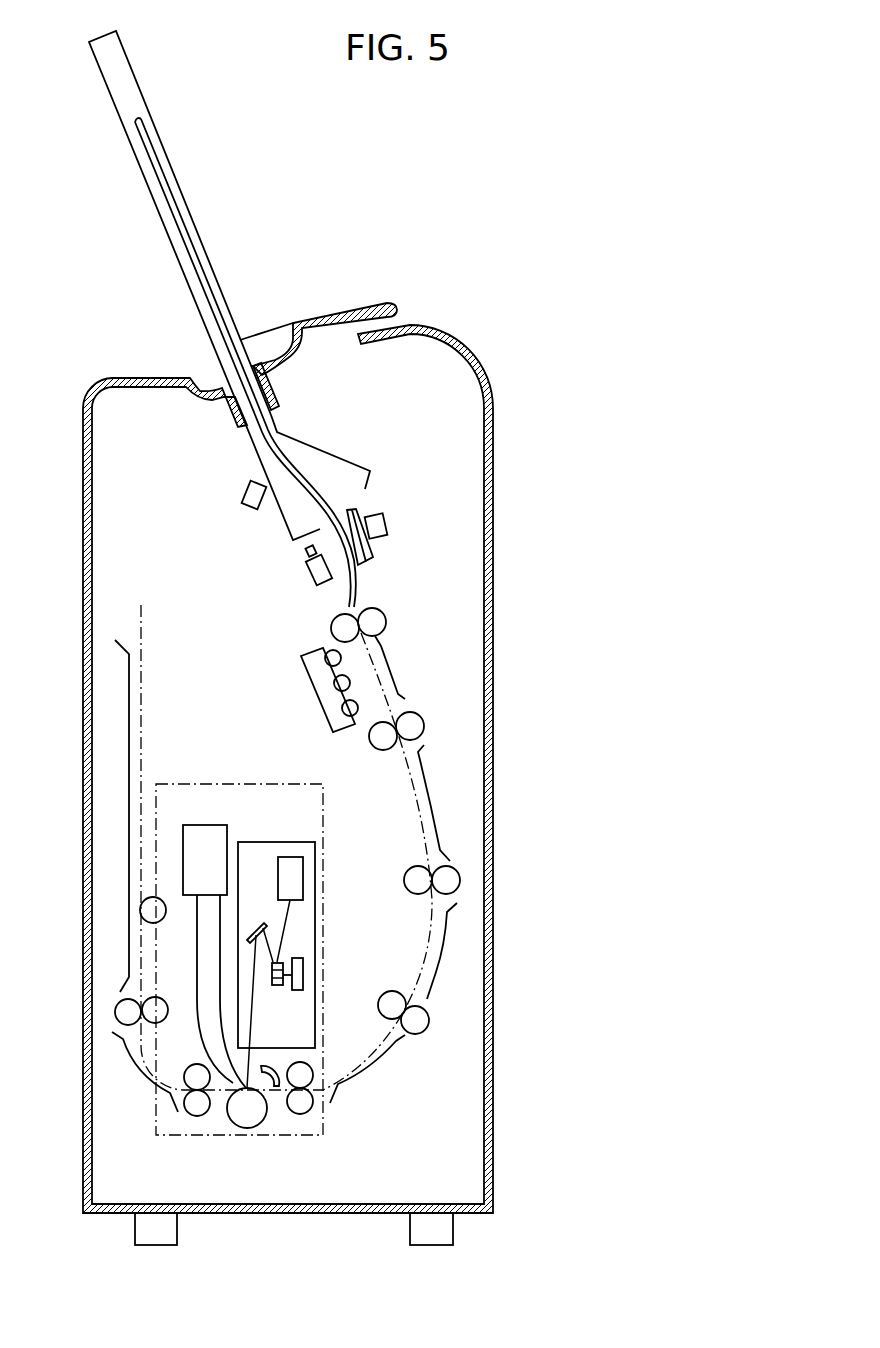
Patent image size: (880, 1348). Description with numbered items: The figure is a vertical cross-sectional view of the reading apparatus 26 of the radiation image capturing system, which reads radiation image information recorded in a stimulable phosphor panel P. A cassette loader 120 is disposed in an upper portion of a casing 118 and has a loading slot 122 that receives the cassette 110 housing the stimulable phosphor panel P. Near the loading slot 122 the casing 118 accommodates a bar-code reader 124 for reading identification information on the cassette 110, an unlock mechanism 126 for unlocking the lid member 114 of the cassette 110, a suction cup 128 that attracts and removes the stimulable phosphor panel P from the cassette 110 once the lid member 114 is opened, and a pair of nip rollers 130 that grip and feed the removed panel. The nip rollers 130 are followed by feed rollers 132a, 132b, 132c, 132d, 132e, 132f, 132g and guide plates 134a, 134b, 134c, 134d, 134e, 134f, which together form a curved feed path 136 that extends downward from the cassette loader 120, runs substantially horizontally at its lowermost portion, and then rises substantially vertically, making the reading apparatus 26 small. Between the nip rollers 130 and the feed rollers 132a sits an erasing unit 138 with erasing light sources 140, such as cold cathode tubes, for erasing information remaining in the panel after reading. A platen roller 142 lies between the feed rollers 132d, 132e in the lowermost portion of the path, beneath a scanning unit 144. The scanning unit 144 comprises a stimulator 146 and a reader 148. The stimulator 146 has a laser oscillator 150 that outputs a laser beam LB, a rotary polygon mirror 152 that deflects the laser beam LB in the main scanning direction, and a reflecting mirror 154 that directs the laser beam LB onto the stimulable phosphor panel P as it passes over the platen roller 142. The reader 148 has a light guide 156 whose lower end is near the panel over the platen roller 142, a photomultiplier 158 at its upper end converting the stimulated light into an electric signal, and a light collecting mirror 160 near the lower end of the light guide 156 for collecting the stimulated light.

The reading apparatus 26 is at (445, 155).
The cassette 110 is at (137, 65).
The stimulable phosphor panel P is at (167, 182).
The lid member 114 is at (338, 458).
The casing 118 is at (493, 460).
The cassette loader 120 is at (208, 431).
The loading slot 122 is at (270, 383).
The bar-code reader 124 is at (243, 505).
The unlock mechanism 126 is at (308, 576).
The suction cup 128 is at (372, 554).
The nip rollers 130 is at (385, 620).
The feed roller 132a is at (413, 727).
The feed roller 132b is at (418, 877).
The feed roller 132c is at (418, 1028).
The feed roller 132d is at (300, 1118).
The feed roller 132e is at (200, 1117).
The feed roller 132f is at (116, 1012).
The feed roller 132g is at (147, 904).
The guide plate 134a is at (392, 666).
The guide plate 134b is at (452, 787).
The guide plate 134c is at (442, 973).
The guide plate 134d is at (367, 1064).
The guide plate 134e is at (138, 1075).
The guide plate 134f is at (127, 740).
The curved feed path 136 is at (455, 819).
The erasing unit 138 is at (301, 644).
The erasing light sources 140 is at (342, 683).
The platen roller 142 is at (247, 1128).
The scanning unit 144 is at (309, 804).
The stimulator 146 is at (320, 898).
The reader 148 is at (215, 815).
The laser oscillator 150 is at (291, 866).
The rotary polygon mirror 152 is at (304, 975).
The reflecting mirror 154 is at (256, 930).
The light guide 156 is at (197, 966).
The photomultiplier 158 is at (198, 838).
The light collecting mirror 160 is at (278, 1068).
The laser beam LB is at (255, 1010).